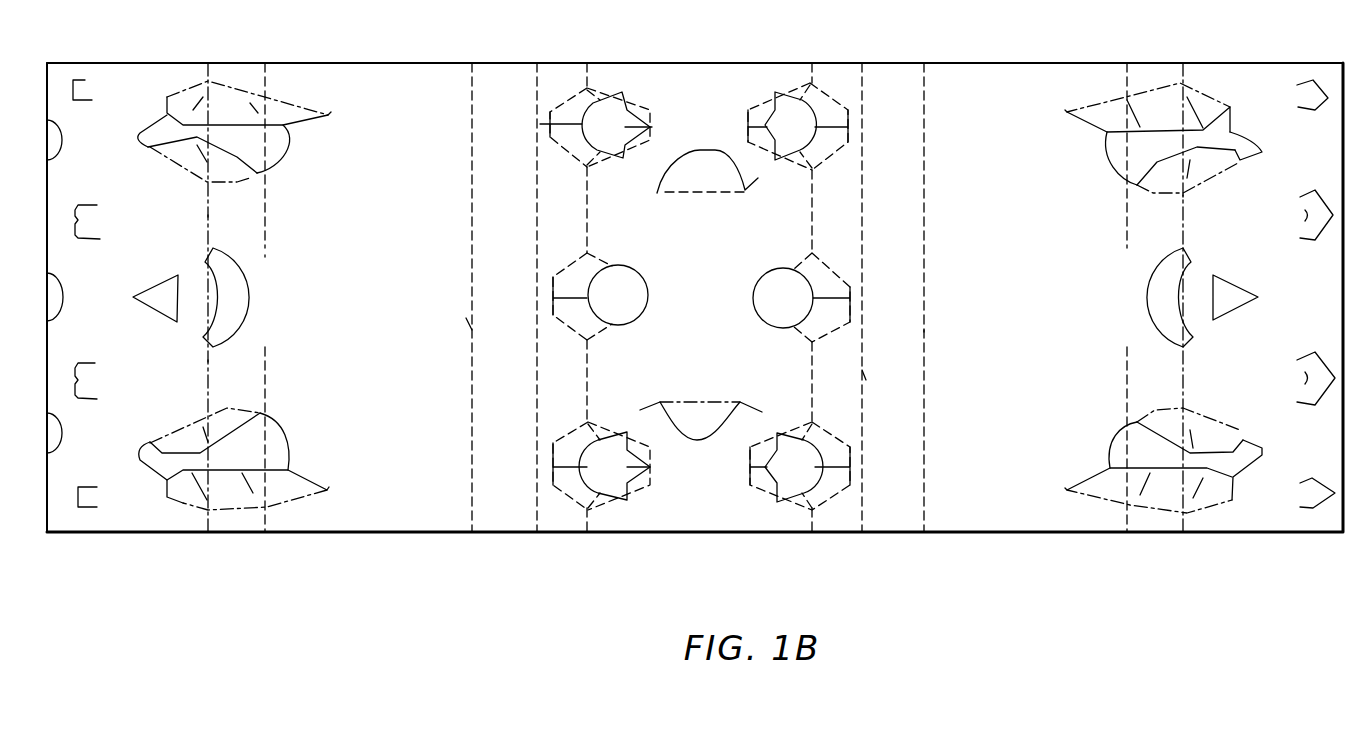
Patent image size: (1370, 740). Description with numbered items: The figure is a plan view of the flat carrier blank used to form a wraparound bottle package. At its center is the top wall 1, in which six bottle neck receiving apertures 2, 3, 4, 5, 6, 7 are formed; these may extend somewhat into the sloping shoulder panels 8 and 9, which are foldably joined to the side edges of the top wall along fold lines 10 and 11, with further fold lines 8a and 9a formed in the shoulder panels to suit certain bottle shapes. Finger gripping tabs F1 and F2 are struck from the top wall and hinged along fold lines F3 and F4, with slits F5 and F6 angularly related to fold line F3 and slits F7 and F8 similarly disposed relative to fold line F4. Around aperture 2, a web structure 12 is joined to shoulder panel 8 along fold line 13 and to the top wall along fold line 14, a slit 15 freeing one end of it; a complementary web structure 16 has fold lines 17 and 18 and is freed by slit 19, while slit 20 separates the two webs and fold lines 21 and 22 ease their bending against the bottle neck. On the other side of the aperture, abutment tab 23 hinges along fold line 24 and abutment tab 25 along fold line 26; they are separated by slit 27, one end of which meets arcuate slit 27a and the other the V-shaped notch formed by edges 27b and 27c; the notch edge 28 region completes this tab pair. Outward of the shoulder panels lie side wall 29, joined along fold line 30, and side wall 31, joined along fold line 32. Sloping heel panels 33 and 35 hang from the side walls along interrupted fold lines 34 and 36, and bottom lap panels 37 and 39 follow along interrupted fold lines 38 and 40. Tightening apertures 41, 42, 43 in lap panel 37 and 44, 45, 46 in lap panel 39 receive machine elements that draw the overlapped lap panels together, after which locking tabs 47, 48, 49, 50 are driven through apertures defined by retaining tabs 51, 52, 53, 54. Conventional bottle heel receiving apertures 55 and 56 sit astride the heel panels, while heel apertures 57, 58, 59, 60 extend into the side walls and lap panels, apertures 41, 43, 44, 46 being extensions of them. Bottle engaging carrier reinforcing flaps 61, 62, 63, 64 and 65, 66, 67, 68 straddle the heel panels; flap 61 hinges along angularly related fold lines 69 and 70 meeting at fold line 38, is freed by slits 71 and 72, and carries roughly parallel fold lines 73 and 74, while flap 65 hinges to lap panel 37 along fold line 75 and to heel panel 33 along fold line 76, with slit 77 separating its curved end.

The top wall 1 is at (708, 324).
The bottle neck receiving aperture 2 is at (627, 168).
The bottle neck receiving aperture 3 is at (652, 291).
The bottle neck receiving aperture 4 is at (657, 487).
The bottle neck receiving aperture 5 is at (775, 85).
The bottle neck receiving aperture 6 is at (760, 318).
The bottle neck receiving aperture 7 is at (760, 452).
The sloping shoulder panel 8 is at (508, 249).
The fold line 8a is at (535, 375).
The sloping shoulder panel 9 is at (897, 216).
The fold line 9a is at (863, 377).
The fold line 10 is at (587, 230).
The fold line 11 is at (812, 220).
The web structure 12 is at (552, 110).
The fold line 13 is at (563, 100).
The fold line 14 is at (607, 90).
The slit 15 is at (540, 127).
The web structure 16 is at (573, 145).
The fold line 17 is at (578, 163).
The fold line 18 is at (610, 163).
The slit 19 is at (553, 133).
The slit 20 is at (553, 140).
The fold line 21 is at (597, 85).
The fold line 22 is at (597, 173).
The abutment tab 23 is at (637, 107).
The fold line 24 is at (633, 95).
The abutment tab 25 is at (637, 143).
The fold line 26 is at (633, 157).
The slit 27 is at (650, 118).
The arcuate slit 27a is at (657, 128).
The edge 27b is at (647, 112).
The edge 27c is at (658, 133).
The tip edge 28 is at (653, 123).
The side wall 29 is at (400, 282).
The fold line 30 is at (470, 323).
The side wall 31 is at (979, 346).
The fold line 32 is at (925, 250).
The sloping heel panel 33 is at (244, 243).
The interrupted fold line 34 is at (264, 80).
The sloping heel panel 35 is at (1162, 233).
The interrupted fold line 36 is at (1125, 80).
The bottom lap panel 37 is at (175, 374).
The interrupted fold line 38 is at (212, 80).
The bottom lap panel 39 is at (1265, 206).
The interrupted fold line 40 is at (1183, 210).
The tightening aperture 41 is at (140, 148).
The tightening aperture 42 is at (143, 310).
The tightening aperture 43 is at (150, 445).
The tightening aperture 44 is at (1253, 137).
The tightening aperture 45 is at (1227, 280).
The tightening aperture 46 is at (1250, 440).
The locking tab 47 is at (1310, 108).
The locking tab 48 is at (1315, 238).
The locking tab 49 is at (1315, 405).
The locking tab 50 is at (1310, 487).
The retaining tab 51 is at (82, 90).
The retaining tab 52 is at (90, 220).
The retaining tab 53 is at (90, 383).
The retaining tab 54 is at (88, 497).
The bottle heel receiving aperture 55 is at (280, 300).
The bottle heel receiving aperture 56 is at (1118, 320).
The bottle heel receiving aperture 57 is at (273, 160).
The bottle heel receiving aperture 58 is at (290, 438).
The bottle heel receiving aperture 59 is at (1108, 152).
The bottle heel receiving aperture 60 is at (1110, 452).
The bottle engaging carrier reinforcing flap 61 is at (212, 108).
The bottle engaging carrier reinforcing flap 62 is at (240, 499).
The bottle engaging carrier reinforcing flap 63 is at (1178, 121).
The bottle engaging carrier reinforcing flap 64 is at (1180, 499).
The bottle engaging carrier reinforcing flap 65 is at (234, 174).
The bottle engaging carrier reinforcing flap 66 is at (240, 438).
The bottle engaging carrier reinforcing flap 67 is at (1219, 174).
The bottle engaging carrier reinforcing flap 68 is at (1222, 451).
The fold line 69 is at (247, 88).
The fold line 70 is at (197, 85).
The slit 71 is at (302, 120).
The slit 72 is at (165, 102).
The fold line 73 is at (208, 115).
The fold line 74 is at (255, 103).
The fold line 75 is at (177, 167).
The fold line 76 is at (222, 187).
The slit 77 is at (253, 177).
The finger gripping tab F1 is at (713, 186).
The finger gripping tab F2 is at (692, 431).
The fold line F3 is at (698, 193).
The fold line F4 is at (693, 400).
The slit F5 is at (640, 183).
The slit F6 is at (745, 192).
The slit F7 is at (642, 410).
The slit F8 is at (753, 407).